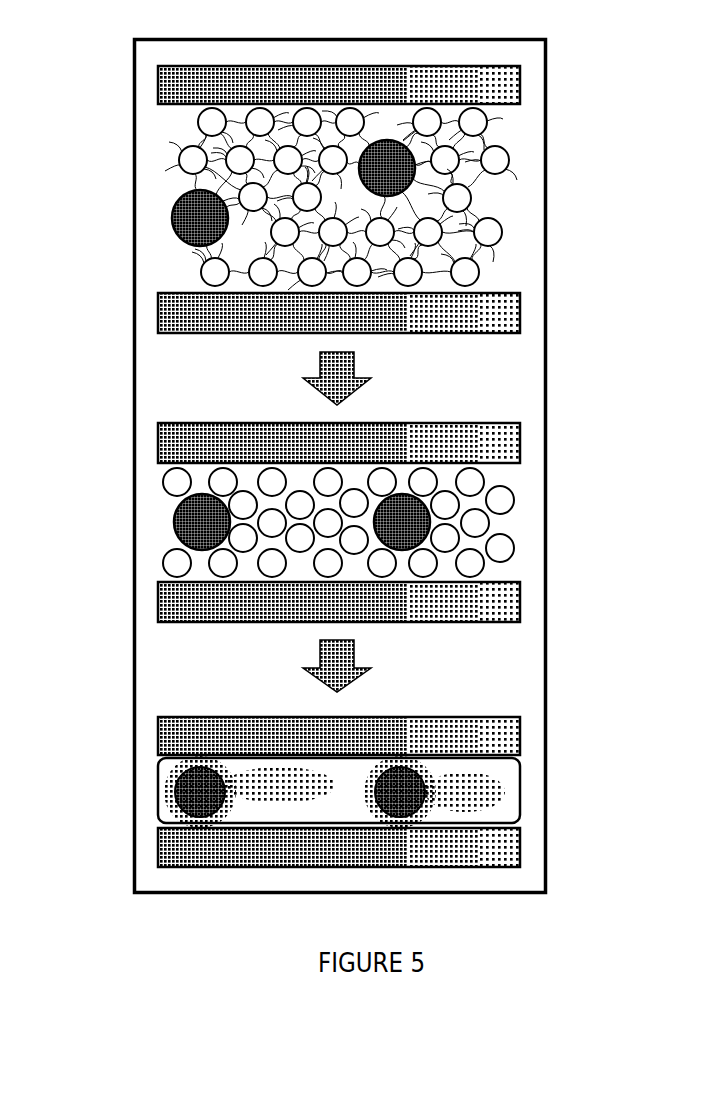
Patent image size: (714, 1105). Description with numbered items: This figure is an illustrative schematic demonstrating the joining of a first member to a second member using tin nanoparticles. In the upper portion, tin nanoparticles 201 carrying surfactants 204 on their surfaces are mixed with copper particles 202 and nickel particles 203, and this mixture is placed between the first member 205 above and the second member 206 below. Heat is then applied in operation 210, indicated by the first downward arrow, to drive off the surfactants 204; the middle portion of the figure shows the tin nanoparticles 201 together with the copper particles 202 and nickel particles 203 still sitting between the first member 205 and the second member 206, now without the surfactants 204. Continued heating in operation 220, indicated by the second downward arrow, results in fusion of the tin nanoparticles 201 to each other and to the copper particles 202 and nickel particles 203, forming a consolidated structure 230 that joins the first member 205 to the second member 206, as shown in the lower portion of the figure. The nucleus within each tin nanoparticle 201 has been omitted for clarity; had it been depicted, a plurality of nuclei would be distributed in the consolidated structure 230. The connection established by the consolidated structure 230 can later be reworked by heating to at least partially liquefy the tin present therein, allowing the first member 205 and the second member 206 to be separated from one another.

The tin nanoparticles 201 is at (458, 200).
The copper particles 202 is at (372, 163).
The nickel particles 203 is at (197, 220).
The surfactants 204 is at (430, 255).
The first member 205 is at (505, 90).
The second member 206 is at (508, 292).
The operation 210 is at (362, 378).
The operation 220 is at (363, 666).
The consolidated structure 230 is at (485, 784).